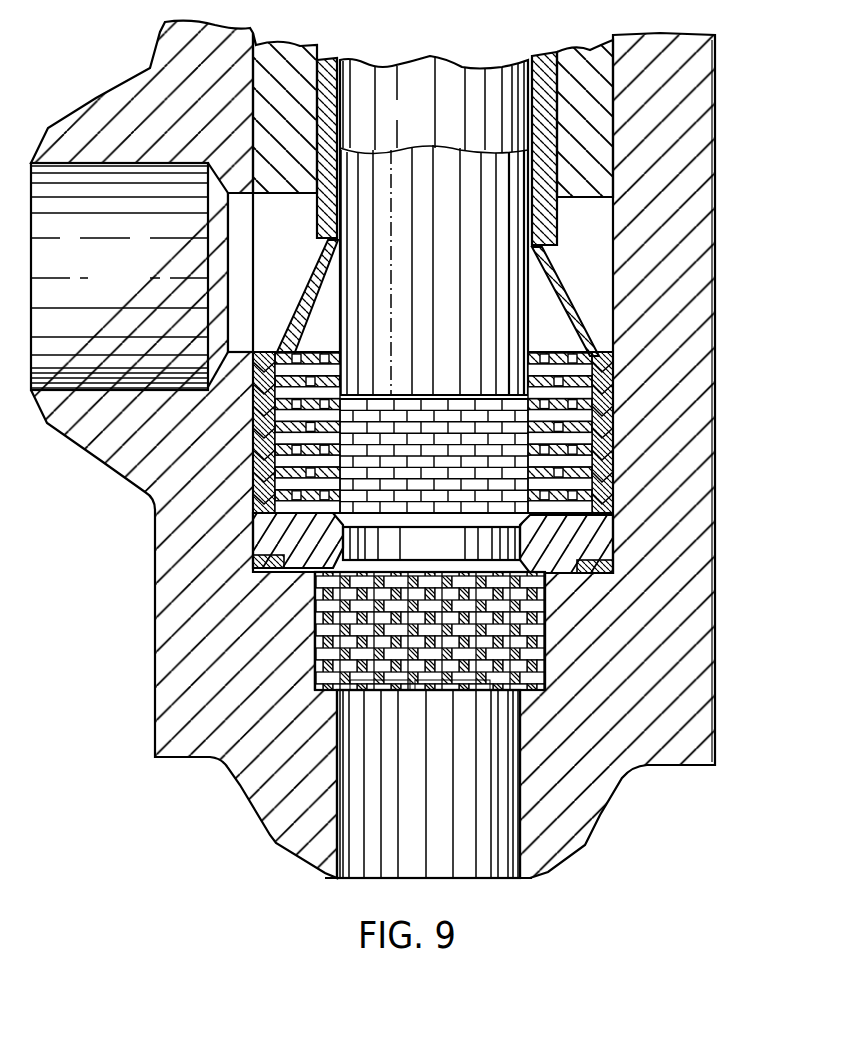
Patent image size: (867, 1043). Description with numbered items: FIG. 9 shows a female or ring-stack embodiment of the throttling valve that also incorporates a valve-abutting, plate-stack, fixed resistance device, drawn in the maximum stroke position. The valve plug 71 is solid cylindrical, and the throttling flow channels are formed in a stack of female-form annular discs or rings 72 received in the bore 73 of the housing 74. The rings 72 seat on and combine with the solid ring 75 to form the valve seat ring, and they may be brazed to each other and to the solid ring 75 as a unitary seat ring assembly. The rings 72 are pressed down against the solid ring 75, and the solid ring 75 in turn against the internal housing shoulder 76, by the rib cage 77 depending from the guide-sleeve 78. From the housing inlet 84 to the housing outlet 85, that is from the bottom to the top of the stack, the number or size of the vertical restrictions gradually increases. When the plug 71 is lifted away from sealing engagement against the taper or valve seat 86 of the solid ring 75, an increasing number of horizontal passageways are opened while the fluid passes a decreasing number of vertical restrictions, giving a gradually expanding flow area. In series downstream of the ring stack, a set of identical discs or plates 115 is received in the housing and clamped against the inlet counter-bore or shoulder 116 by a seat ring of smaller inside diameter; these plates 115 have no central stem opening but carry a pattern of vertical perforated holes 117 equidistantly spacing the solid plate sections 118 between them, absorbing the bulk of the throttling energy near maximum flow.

The valve plug 71 is at (440, 276).
The annular discs or rings 72 is at (628, 395).
The bore of housing 73 is at (612, 258).
The housing 74 is at (697, 270).
The solid ring 75 is at (583, 548).
The internal housing shoulder 76 is at (290, 574).
The rib cage 77 is at (313, 290).
The guide-sleeve 78 is at (330, 73).
The housing inlet 84 is at (431, 809).
The housing outlet 85 is at (110, 279).
The valve seat 86 is at (518, 525).
The discs or plates 115 is at (545, 663).
The counter-bore or shoulder 116 is at (315, 680).
The perforated holes 117 is at (418, 700).
The solid plate sections or portions 118 is at (362, 700).